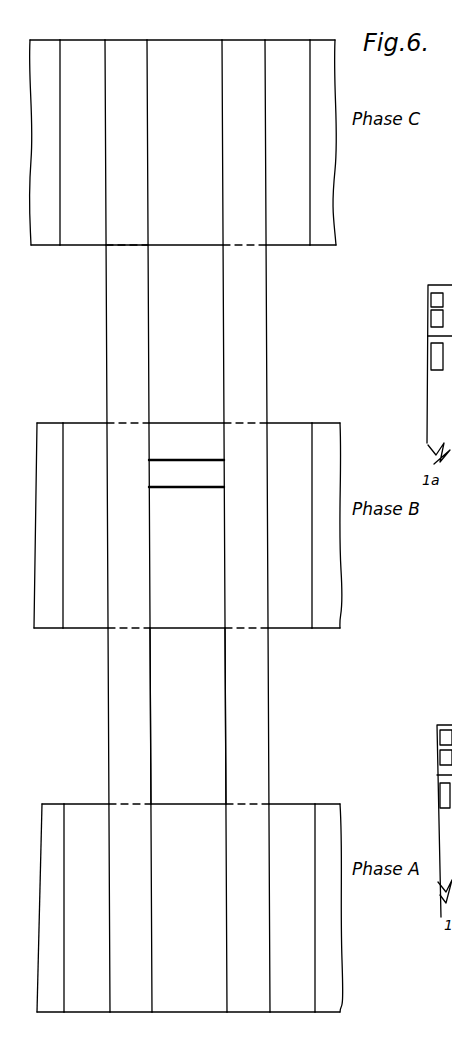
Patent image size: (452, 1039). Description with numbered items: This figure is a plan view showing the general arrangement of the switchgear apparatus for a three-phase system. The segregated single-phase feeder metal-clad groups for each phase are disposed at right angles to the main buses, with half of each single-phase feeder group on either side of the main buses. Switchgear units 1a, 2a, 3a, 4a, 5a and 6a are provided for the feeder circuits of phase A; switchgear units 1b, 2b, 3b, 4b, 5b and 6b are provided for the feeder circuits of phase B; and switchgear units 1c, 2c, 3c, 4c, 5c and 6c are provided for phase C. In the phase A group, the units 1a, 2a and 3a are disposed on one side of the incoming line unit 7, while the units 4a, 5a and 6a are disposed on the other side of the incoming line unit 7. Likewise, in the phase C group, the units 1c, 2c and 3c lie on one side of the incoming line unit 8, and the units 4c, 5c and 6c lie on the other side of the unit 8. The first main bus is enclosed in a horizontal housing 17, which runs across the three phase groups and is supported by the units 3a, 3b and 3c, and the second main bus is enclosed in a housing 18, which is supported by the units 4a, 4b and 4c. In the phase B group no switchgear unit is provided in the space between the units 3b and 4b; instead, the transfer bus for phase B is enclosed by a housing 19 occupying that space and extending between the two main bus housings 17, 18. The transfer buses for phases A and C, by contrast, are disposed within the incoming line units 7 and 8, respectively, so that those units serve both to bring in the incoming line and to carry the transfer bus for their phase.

The switchgear unit 1a is at (53, 1013).
The switchgear unit 2a is at (96, 1013).
The switchgear unit 3a is at (141, 1013).
The switchgear unit 4a is at (257, 1013).
The switchgear unit 5a is at (303, 1013).
The switchgear unit 6a is at (341, 1013).
The incoming line unit 7 is at (195, 1013).
The switchgear unit 1b is at (59, 632).
The switchgear unit 2b is at (97, 632).
The switchgear unit 3b is at (143, 632).
The switchgear unit 4b is at (261, 632).
The switchgear unit 5b is at (305, 632).
The switchgear unit 6b is at (345, 632).
The switchgear unit 1c is at (55, 249).
The switchgear unit 2c is at (93, 249).
The switchgear unit 3c is at (141, 249).
The switchgear unit 4c is at (259, 249).
The switchgear unit 5c is at (305, 249).
The switchgear unit 6c is at (323, 152).
The incoming line unit 8 is at (193, 249).
The horizontal housing 17 is at (151, 716).
The housing 18 is at (225, 667).
The housing 19 is at (187, 460).